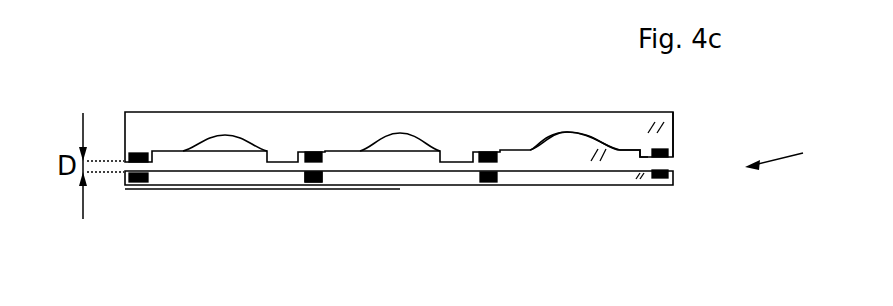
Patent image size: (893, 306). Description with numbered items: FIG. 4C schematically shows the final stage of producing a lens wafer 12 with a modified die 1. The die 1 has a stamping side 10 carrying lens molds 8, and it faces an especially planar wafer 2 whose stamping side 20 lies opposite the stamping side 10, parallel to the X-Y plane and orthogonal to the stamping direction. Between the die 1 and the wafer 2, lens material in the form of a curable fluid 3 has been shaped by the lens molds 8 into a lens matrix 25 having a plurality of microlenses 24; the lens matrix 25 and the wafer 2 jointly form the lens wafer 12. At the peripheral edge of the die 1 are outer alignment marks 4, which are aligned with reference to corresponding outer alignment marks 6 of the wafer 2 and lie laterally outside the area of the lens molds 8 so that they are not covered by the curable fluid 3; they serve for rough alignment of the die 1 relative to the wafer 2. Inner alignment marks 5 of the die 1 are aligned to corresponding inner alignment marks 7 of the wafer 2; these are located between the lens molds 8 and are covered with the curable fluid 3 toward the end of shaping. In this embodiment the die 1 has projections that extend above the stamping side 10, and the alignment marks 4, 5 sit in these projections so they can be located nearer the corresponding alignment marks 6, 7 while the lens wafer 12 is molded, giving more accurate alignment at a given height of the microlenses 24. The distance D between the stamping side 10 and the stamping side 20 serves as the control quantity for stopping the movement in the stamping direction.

The die 1 is at (404, 122).
The wafer 2 is at (402, 178).
The curable fluid 3 is at (622, 153).
The outer alignment marks 4 is at (135, 155).
The inner alignment marks 5 is at (320, 162).
The outer alignment marks 6 is at (142, 180).
The inner alignment marks 7 is at (310, 178).
The lens molds 8 is at (225, 135).
The stamping side 10 is at (677, 159).
The lens wafer 12 is at (792, 152).
The stamping side 20 is at (165, 176).
The microlenses 24 is at (563, 155).
The lens matrix 25 is at (615, 160).